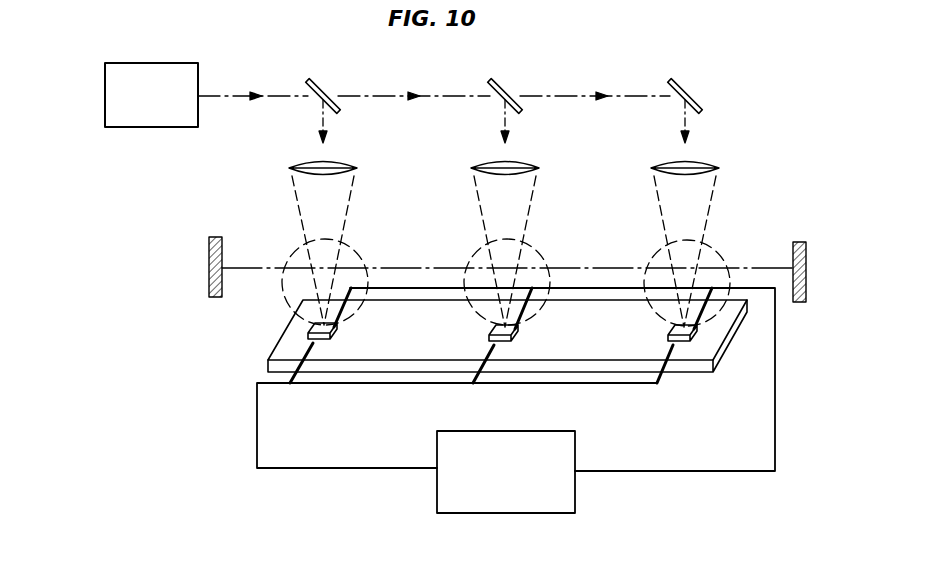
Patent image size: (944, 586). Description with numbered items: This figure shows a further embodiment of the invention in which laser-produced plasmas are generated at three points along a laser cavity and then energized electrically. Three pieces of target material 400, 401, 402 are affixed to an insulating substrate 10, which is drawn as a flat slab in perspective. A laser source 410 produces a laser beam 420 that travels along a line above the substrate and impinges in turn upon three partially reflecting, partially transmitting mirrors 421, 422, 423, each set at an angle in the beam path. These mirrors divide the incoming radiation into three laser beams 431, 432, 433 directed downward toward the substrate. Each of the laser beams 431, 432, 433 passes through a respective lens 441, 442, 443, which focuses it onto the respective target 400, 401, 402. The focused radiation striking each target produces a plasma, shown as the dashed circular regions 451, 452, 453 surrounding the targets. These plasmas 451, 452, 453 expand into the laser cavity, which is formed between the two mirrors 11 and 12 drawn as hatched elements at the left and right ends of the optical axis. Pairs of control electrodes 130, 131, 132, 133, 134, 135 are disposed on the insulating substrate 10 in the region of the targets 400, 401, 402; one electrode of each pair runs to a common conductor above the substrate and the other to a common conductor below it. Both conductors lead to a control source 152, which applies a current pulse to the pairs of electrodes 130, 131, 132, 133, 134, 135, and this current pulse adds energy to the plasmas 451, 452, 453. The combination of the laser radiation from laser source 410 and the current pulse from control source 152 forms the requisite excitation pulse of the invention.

The insulating substrate 10 is at (698, 370).
The mirror 11 is at (215, 237).
The mirror 12 is at (799, 242).
The control electrode 130 is at (345, 312).
The control electrode 131 is at (318, 348).
The control electrode 132 is at (526, 313).
The control electrode 133 is at (507, 348).
The control electrode 134 is at (705, 318).
The control electrode 135 is at (668, 350).
The control source 152 is at (575, 496).
The target material 400 is at (307, 334).
The target material 401 is at (488, 335).
The target material 402 is at (667, 334).
The laser source 410 is at (174, 63).
The laser beam 420 is at (262, 90).
The partially reflecting, partially transmitting mirror 421 is at (333, 86).
The partially reflecting, partially transmitting mirror 422 is at (513, 86).
The partially reflecting, partially transmitting mirror 423 is at (695, 86).
The laser beam 431 is at (320, 128).
The laser beam 432 is at (502, 110).
The laser beam 433 is at (683, 126).
The lens 441 is at (358, 164).
The lens 442 is at (540, 164).
The lens 443 is at (720, 164).
The plasma 451 is at (362, 260).
The plasma 452 is at (543, 260).
The plasma 453 is at (722, 260).